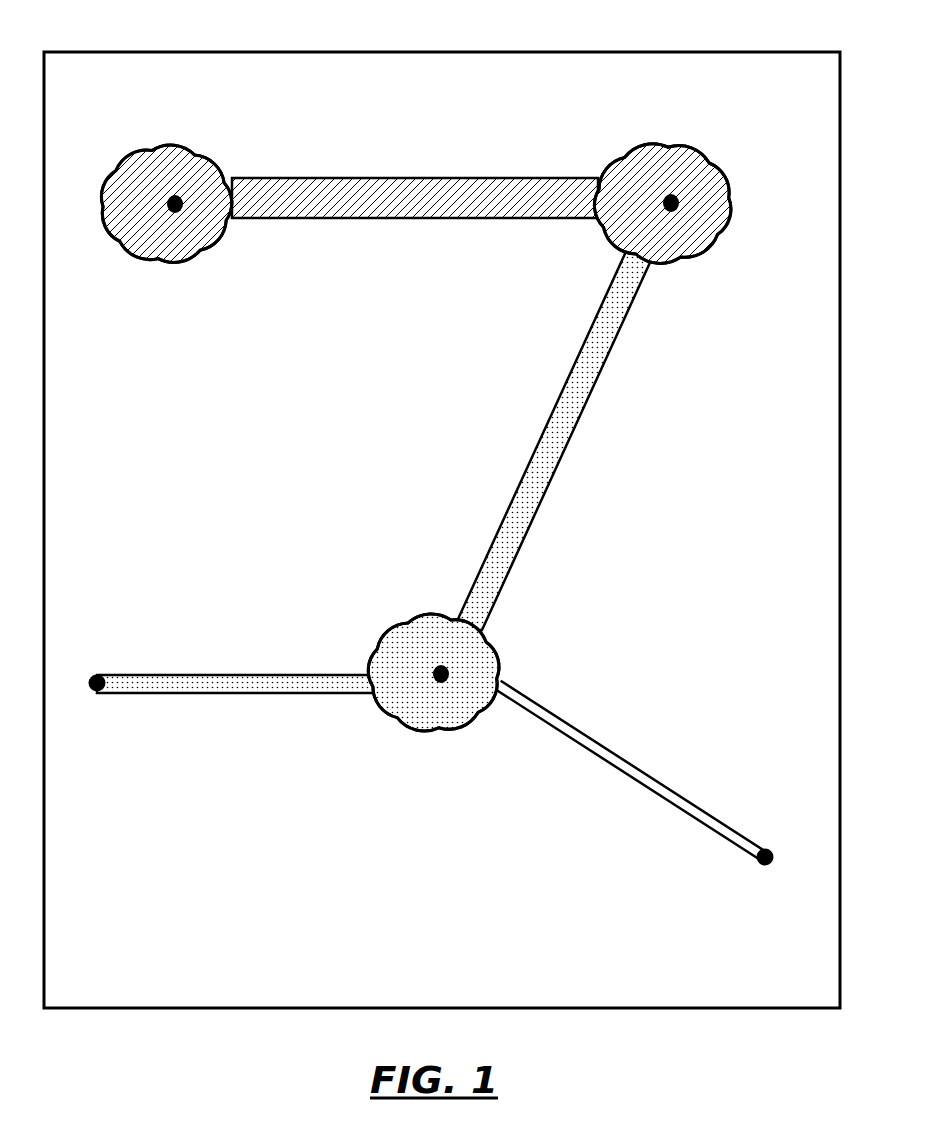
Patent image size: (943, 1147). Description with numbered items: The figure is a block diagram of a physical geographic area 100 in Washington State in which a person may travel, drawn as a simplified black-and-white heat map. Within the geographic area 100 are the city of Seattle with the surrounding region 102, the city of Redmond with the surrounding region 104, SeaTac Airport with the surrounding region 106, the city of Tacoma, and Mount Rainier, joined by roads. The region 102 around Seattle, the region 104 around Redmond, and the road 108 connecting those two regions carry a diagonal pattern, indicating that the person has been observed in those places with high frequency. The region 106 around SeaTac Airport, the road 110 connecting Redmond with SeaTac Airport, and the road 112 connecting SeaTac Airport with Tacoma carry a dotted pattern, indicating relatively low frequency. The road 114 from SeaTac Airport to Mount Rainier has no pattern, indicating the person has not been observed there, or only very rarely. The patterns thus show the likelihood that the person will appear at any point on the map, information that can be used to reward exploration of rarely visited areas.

The geographic area 100 is at (700, 52).
The region around Seattle 102 is at (210, 146).
The region around Redmond 104 is at (718, 163).
The region around SeaTac Airport 106 is at (503, 654).
The road connecting Seattle and Redmond regions 108 is at (379, 168).
The road connecting Redmond with SeaTac Airport 110 is at (560, 388).
The road connecting SeaTac Airport with Tacoma 112 is at (203, 664).
The road from SeaTac Airport to Mount Rainier 114 is at (655, 763).